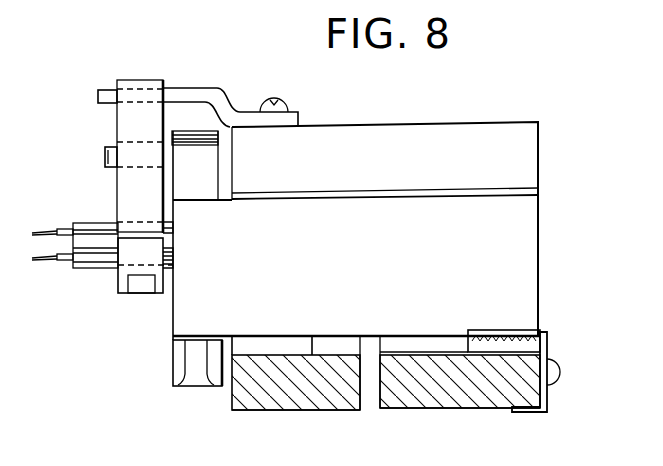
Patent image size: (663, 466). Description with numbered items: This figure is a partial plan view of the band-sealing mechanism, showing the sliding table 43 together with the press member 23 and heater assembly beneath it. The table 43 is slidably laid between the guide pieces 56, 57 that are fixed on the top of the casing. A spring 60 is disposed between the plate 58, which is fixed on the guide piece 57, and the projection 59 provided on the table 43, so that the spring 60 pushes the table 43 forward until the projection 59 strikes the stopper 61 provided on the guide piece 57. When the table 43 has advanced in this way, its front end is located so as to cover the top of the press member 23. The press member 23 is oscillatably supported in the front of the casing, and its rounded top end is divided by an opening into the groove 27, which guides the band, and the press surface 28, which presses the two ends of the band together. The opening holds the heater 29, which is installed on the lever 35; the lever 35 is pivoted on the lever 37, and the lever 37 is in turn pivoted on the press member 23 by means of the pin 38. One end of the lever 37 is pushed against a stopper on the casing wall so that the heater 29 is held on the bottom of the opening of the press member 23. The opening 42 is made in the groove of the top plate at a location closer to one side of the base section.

The press member 23 is at (182, 357).
The groove 27 is at (200, 372).
The press surface 28 is at (197, 138).
The heater 29 is at (97, 253).
The lever 35 is at (137, 215).
The lever 37 is at (128, 120).
The pin 38 is at (105, 157).
The opening 42 is at (98, 93).
The table 43 is at (195, 319).
The guide piece 56 is at (465, 148).
The guide piece 57 is at (293, 388).
The plate 58 is at (547, 393).
The projection 59 is at (438, 345).
The spring 60 is at (497, 342).
The stopper 61 is at (370, 378).